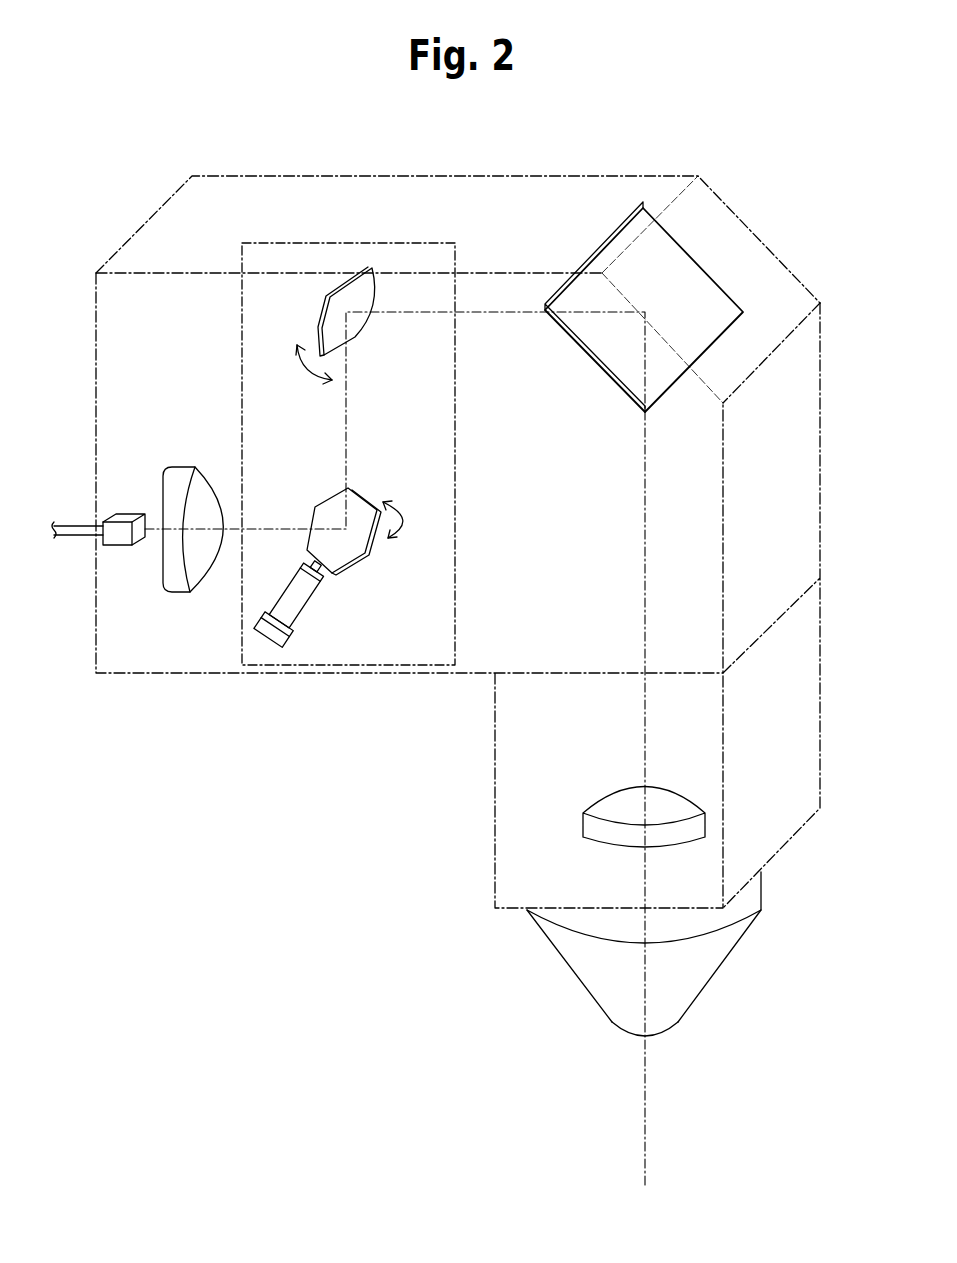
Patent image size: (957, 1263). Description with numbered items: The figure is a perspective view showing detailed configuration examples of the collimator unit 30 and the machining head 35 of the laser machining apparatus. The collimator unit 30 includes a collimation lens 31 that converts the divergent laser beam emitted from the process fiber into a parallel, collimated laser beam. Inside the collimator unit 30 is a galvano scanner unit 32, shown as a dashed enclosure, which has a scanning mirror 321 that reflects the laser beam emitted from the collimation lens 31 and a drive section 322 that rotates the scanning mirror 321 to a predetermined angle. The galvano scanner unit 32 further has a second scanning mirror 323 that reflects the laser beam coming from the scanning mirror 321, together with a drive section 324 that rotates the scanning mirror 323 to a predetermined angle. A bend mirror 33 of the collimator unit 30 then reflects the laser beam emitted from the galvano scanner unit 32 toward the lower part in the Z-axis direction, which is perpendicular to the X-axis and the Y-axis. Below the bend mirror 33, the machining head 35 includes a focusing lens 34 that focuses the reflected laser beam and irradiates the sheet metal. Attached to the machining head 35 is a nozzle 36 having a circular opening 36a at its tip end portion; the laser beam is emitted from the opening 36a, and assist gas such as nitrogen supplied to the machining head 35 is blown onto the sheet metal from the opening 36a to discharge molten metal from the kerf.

The collimator unit 30 is at (524, 196).
The collimation lens 31 is at (186, 465).
The galvano scanner unit 32 is at (330, 667).
The scanning mirror 321 is at (330, 500).
The drive section 322 is at (297, 611).
The scanning mirror 323 is at (372, 268).
The drive section 324 is at (328, 300).
The bend mirror 33 is at (630, 226).
The focusing lens 34 is at (687, 803).
The machining head 35 is at (795, 752).
The nozzle 36 is at (730, 962).
The opening 36a is at (651, 1040).